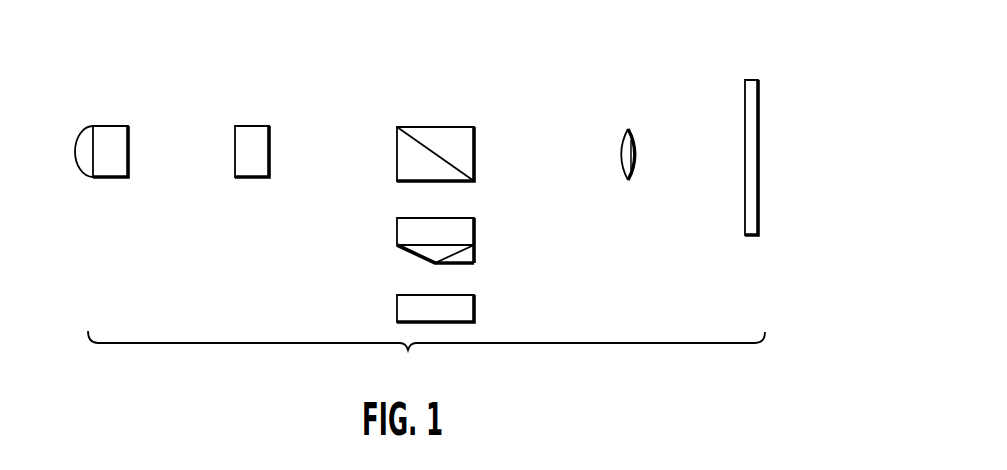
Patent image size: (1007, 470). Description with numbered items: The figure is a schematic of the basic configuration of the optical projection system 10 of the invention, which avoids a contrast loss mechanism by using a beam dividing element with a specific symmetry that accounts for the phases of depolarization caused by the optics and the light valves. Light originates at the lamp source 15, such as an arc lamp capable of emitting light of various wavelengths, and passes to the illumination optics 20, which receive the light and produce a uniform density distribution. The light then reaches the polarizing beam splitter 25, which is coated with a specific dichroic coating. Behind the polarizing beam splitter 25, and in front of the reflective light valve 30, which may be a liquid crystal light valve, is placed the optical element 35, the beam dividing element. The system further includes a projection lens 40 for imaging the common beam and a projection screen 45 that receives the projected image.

The optical projection system 10 is at (626, 82).
The lamp source 15 is at (112, 168).
The illumination optics 20 is at (253, 168).
The polarizing beam splitter 25 is at (448, 142).
The reflective light valve 30 is at (467, 309).
The optical element 35 is at (467, 232).
The projection lens 40 is at (634, 178).
The projection screen 45 is at (752, 230).